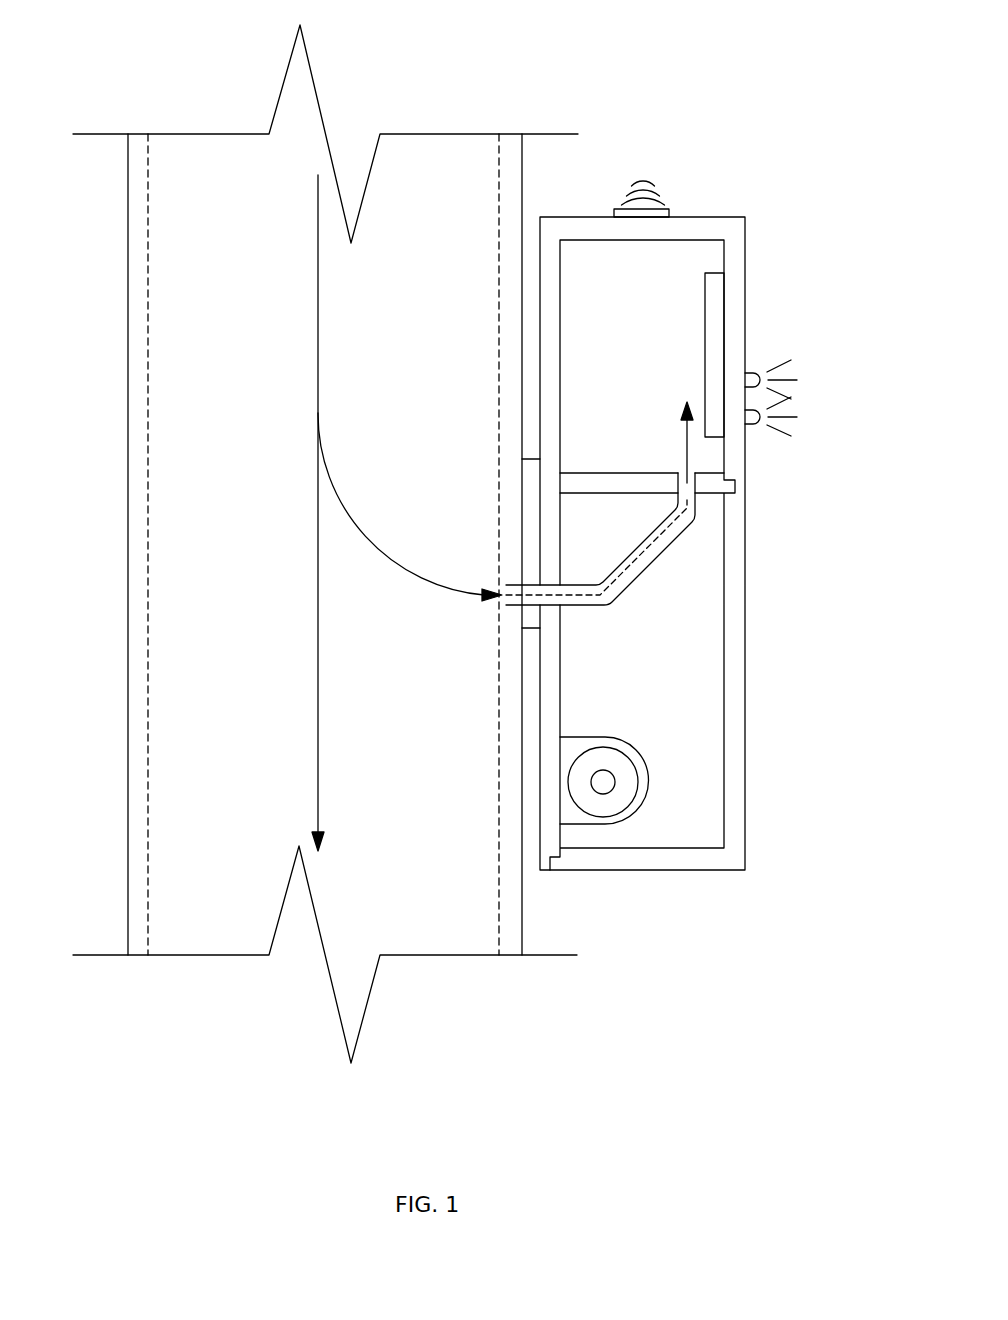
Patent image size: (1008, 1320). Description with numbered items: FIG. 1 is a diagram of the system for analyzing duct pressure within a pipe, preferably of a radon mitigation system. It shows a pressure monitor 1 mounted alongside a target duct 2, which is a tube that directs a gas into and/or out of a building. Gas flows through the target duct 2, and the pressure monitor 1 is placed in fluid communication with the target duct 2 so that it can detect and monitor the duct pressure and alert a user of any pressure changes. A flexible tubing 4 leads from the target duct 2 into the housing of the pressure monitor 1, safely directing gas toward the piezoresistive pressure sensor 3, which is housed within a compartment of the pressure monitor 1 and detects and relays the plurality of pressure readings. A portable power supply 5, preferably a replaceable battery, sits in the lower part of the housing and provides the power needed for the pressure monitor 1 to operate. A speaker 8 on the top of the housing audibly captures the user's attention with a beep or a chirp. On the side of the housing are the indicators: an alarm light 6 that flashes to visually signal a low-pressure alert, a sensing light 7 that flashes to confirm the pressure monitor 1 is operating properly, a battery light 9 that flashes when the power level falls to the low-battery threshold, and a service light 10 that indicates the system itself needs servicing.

The pressure monitor 1 is at (735, 261).
The target duct 2 is at (137, 545).
The piezoresistive pressure sensor 3 is at (713, 282).
The flexible tubing 4 is at (660, 553).
The portable power supply 5 is at (598, 752).
The alarm light 6 is at (808, 402).
The sensing light 7 is at (808, 402).
The speaker 8 is at (669, 211).
The battery light 9 is at (808, 402).
The service light 10 is at (752, 375).